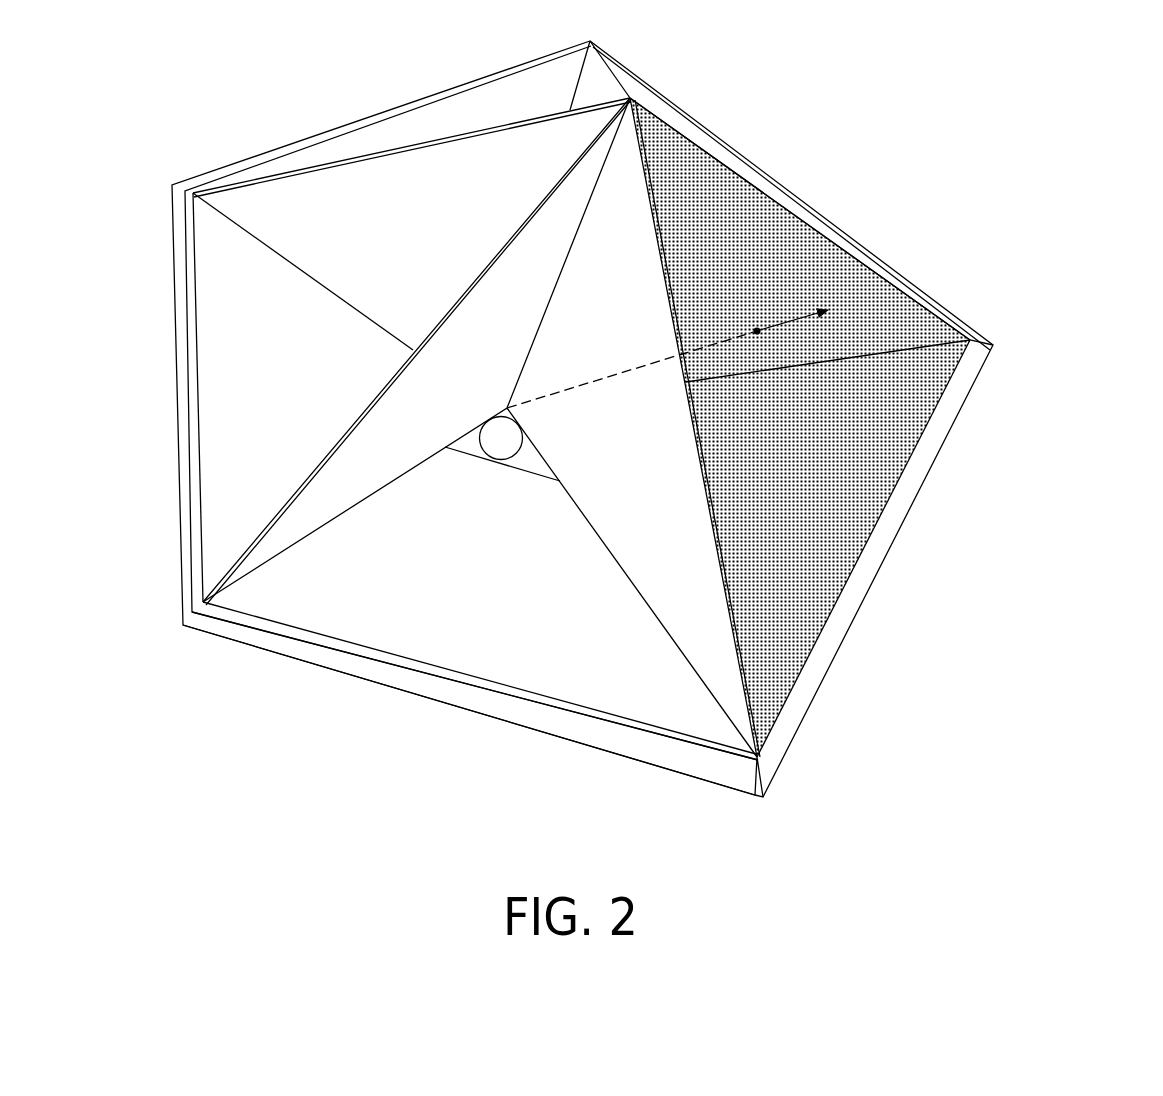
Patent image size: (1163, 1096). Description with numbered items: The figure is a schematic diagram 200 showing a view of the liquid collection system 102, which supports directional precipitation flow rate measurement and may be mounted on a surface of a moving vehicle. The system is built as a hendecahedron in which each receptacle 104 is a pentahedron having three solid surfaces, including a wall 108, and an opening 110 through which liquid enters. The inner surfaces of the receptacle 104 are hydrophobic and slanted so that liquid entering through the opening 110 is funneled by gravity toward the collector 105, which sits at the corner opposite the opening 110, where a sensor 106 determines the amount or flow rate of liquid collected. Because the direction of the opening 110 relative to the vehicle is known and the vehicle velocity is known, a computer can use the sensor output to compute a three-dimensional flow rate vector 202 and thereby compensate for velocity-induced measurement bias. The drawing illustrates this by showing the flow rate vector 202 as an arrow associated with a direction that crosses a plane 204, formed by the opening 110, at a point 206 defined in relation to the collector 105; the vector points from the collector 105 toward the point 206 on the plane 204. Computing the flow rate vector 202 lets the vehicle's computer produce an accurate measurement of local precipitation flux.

The liquid collection system 102 is at (590, 41).
The receptacle 104 is at (478, 622).
The collector 105 is at (541, 477).
The sensor 106 is at (480, 431).
The wall 108 is at (705, 502).
The opening 110 is at (525, 682).
The schematic diagram 200 is at (1040, 803).
The flow rate vector 202 is at (722, 340).
The plane 204 is at (853, 570).
The point 206 is at (760, 334).